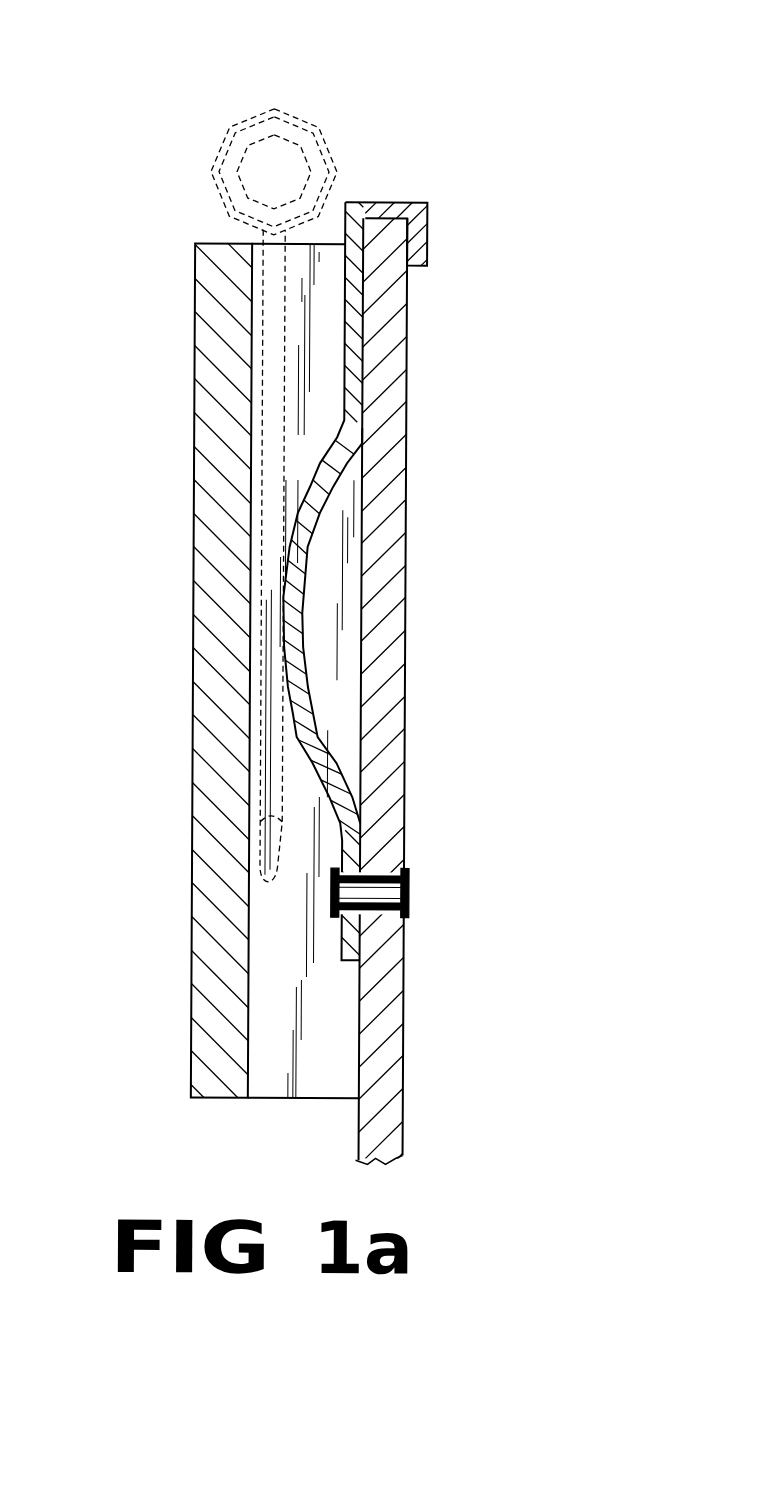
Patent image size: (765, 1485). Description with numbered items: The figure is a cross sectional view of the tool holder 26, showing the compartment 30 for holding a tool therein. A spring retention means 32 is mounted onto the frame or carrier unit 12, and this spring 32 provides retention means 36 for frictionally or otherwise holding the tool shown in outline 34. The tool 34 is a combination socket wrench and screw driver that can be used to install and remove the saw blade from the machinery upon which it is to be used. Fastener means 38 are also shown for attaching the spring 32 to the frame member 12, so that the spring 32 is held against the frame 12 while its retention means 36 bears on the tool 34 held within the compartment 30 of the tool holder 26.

The frame or carrier unit 12 is at (387, 383).
The tool holder 26 is at (213, 405).
The compartment 30 is at (322, 243).
The spring retention means 32 is at (416, 223).
The tool shown in outline 34 is at (284, 113).
The retention means 36 is at (295, 620).
The fastener means 38 is at (411, 890).